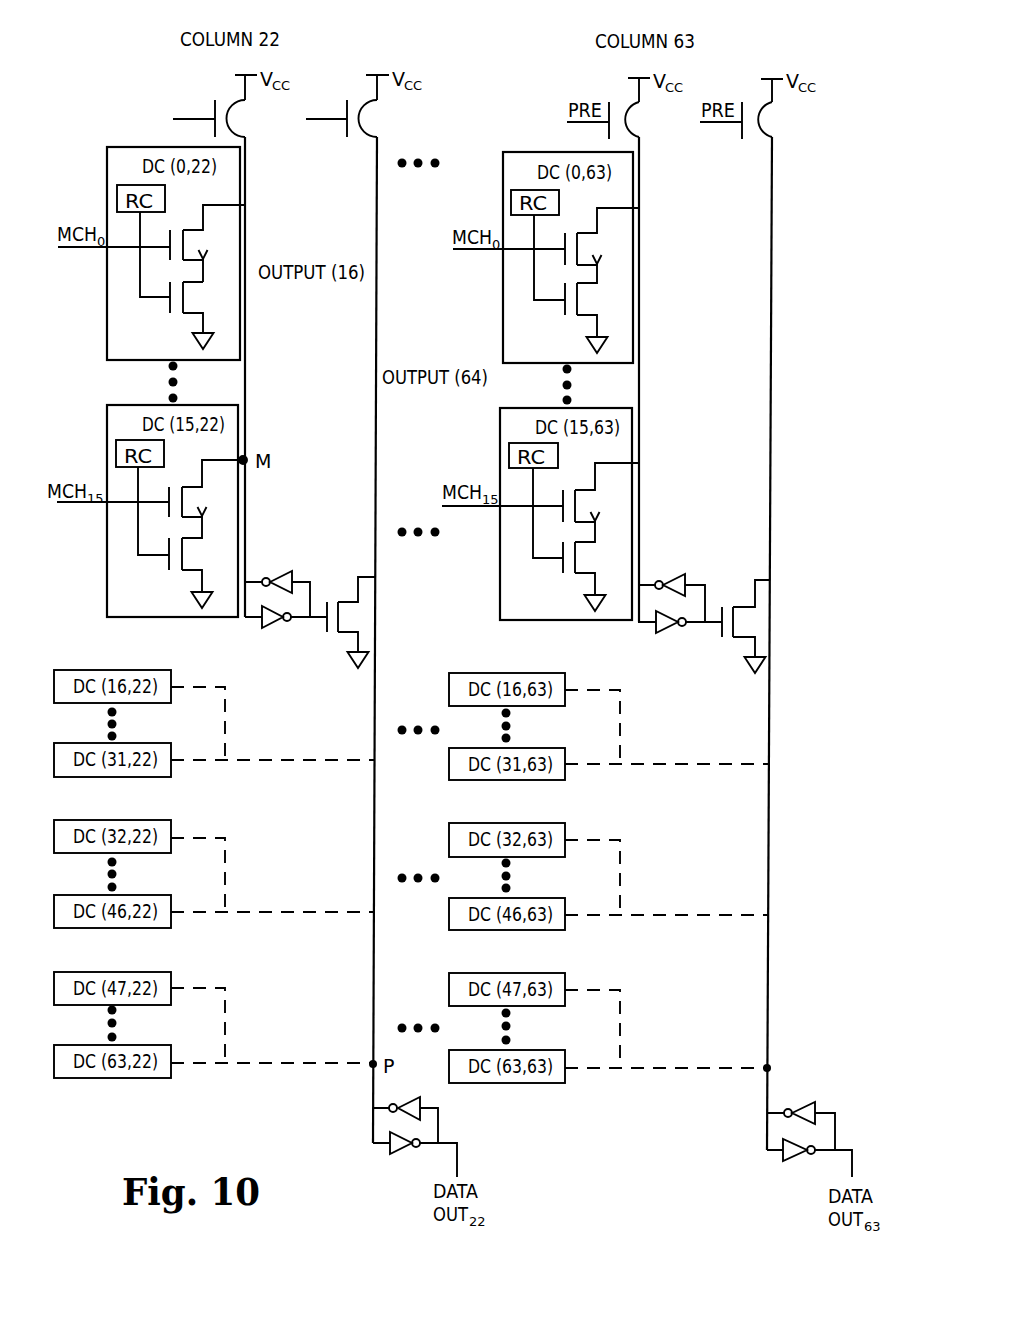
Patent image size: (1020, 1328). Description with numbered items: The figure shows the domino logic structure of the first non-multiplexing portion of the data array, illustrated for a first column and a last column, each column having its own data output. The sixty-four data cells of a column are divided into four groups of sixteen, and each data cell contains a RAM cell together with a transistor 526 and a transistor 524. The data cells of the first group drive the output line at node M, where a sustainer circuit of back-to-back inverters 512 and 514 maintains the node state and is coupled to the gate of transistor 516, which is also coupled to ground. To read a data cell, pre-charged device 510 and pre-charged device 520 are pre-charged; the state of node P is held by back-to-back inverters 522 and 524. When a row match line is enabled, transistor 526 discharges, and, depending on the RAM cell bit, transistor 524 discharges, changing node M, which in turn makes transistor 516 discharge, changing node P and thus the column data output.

The pre-charged device 510 is at (226, 116).
The pre-charged device 520 is at (359, 116).
The transistor 526 is at (207, 243).
The transistor 524 is at (295, 733).
The inverter 512 is at (277, 581).
The inverter 514 is at (270, 632).
The transistor 516 is at (342, 622).
The inverter 522 is at (405, 1109).